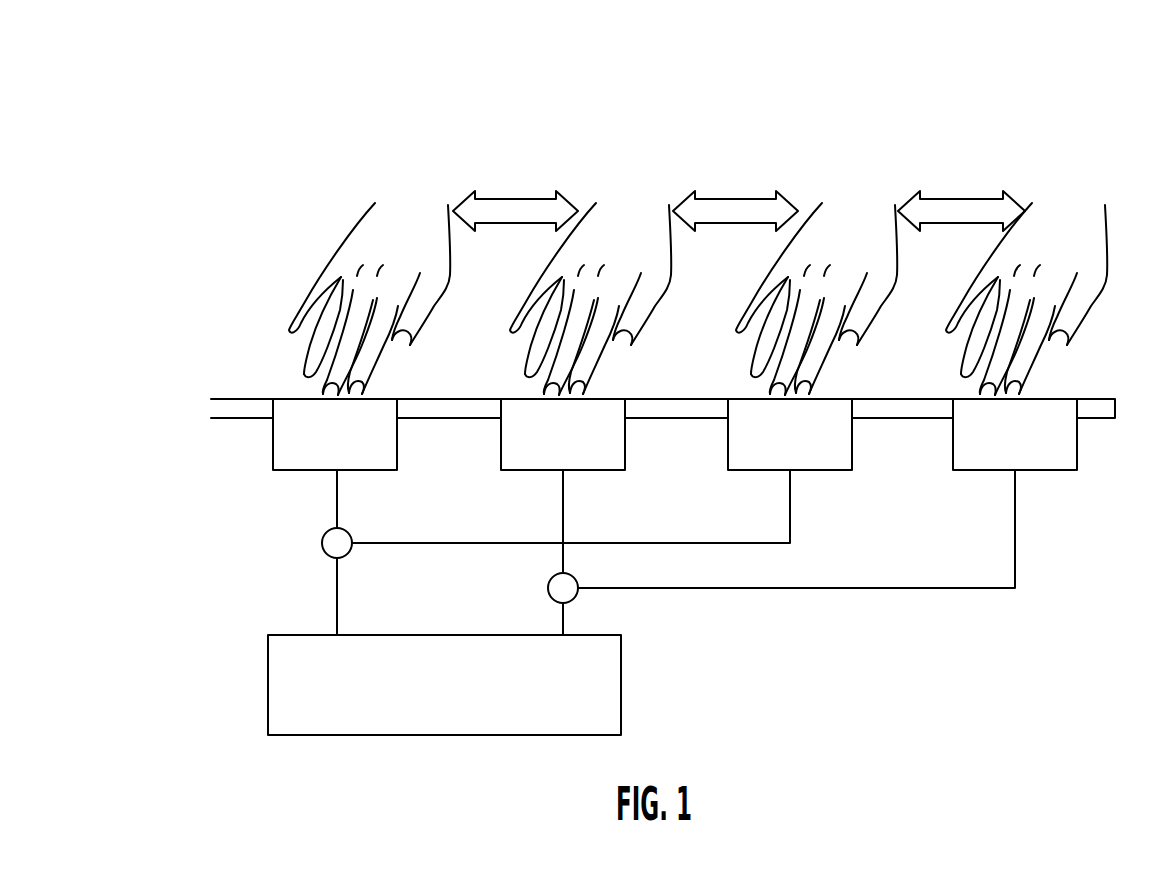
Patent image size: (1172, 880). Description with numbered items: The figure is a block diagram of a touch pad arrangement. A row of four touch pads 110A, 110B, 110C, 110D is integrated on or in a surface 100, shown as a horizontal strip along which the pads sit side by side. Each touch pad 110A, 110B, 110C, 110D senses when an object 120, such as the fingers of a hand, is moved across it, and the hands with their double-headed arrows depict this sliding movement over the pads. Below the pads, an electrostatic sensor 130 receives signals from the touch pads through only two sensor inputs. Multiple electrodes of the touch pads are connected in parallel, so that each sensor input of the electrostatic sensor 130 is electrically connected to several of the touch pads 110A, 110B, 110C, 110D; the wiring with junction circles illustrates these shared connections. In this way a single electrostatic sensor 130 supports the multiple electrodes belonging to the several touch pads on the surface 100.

The surface 100 is at (1092, 397).
The touch pad 110A is at (313, 449).
The touch pad 110B is at (541, 449).
The touch pad 110C is at (768, 449).
The touch pad 110D is at (993, 449).
The object 120 is at (1057, 200).
The electrostatic sensor 130 is at (428, 699).